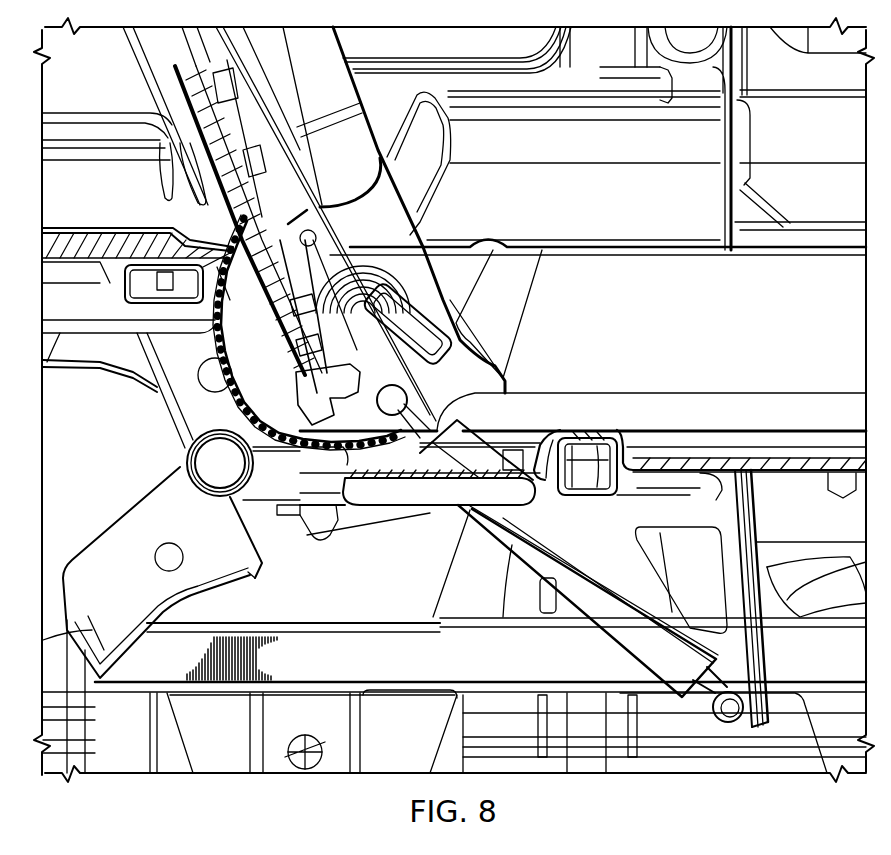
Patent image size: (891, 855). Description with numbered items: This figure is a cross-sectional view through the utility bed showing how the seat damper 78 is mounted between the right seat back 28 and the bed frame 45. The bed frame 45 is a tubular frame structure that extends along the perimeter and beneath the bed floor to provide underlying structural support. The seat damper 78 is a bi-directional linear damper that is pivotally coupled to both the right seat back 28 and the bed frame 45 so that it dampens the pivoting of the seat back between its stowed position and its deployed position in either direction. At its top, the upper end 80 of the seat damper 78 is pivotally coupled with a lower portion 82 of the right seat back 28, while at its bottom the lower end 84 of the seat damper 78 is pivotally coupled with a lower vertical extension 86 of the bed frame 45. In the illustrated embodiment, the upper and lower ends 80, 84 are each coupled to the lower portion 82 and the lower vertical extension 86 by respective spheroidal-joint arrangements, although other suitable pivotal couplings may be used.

The right seat back 28 is at (183, 61).
The bed frame 45 is at (148, 511).
The seat damper 78 is at (489, 547).
The upper end 80 is at (375, 383).
The lower portion 82 is at (360, 420).
The lower end 84 is at (746, 742).
The lower vertical extension 86 is at (727, 508).